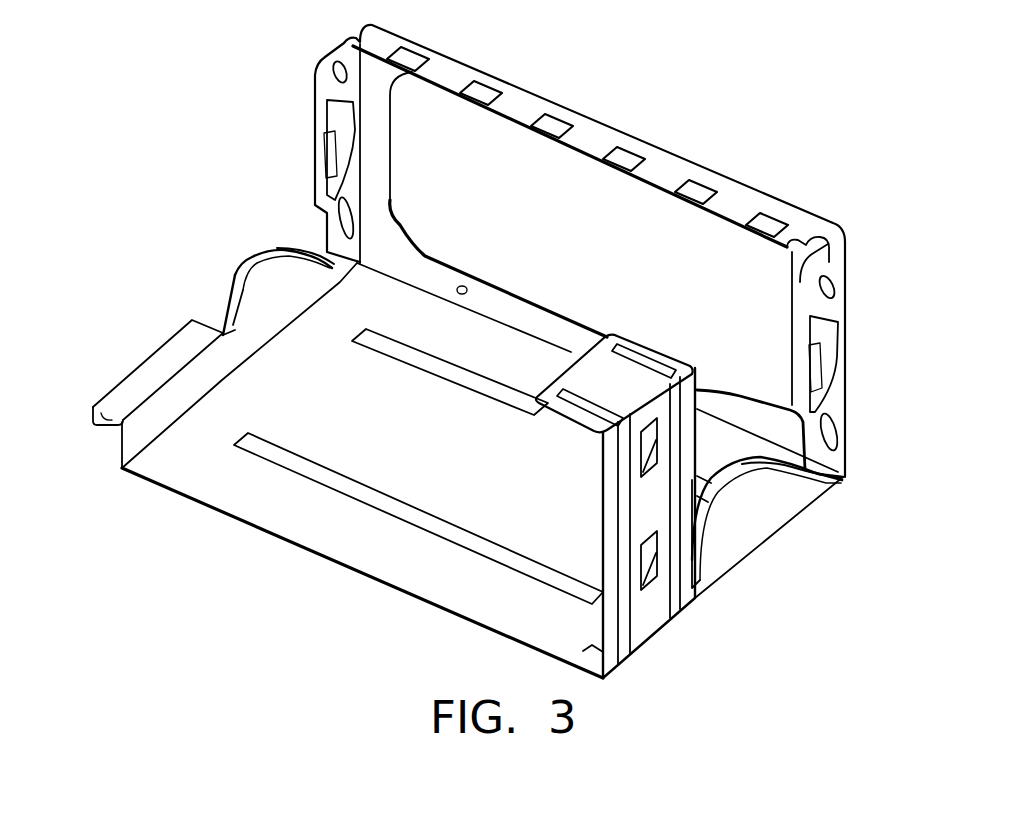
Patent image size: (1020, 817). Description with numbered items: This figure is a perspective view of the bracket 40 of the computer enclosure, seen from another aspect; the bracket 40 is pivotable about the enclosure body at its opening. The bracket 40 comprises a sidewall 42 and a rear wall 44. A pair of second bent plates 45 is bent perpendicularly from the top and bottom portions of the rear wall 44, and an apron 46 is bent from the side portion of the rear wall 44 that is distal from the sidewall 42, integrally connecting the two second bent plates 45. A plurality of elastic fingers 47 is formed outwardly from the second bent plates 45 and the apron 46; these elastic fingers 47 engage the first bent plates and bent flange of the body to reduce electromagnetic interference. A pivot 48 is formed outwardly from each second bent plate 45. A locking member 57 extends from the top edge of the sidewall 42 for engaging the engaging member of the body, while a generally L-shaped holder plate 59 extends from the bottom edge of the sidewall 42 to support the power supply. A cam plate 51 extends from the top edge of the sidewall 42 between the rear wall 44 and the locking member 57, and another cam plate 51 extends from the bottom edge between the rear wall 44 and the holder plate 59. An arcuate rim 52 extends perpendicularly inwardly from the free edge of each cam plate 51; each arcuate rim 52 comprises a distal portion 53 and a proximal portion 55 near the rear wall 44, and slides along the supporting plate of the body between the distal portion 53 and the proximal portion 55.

The bracket 40 is at (628, 88).
The sidewall 42 is at (242, 483).
The rear wall 44 is at (375, 82).
The second bent plate 45 is at (319, 99).
The apron 46 is at (653, 160).
The elastic finger 47 is at (690, 175).
The pivot 48 is at (834, 297).
The cam plate 51 is at (262, 307).
The arcuate rim 52 is at (282, 250).
The distal portion 53 is at (247, 272).
The proximal portion 55 is at (312, 255).
The locking member 57 is at (103, 424).
The holder plate 59 is at (643, 522).